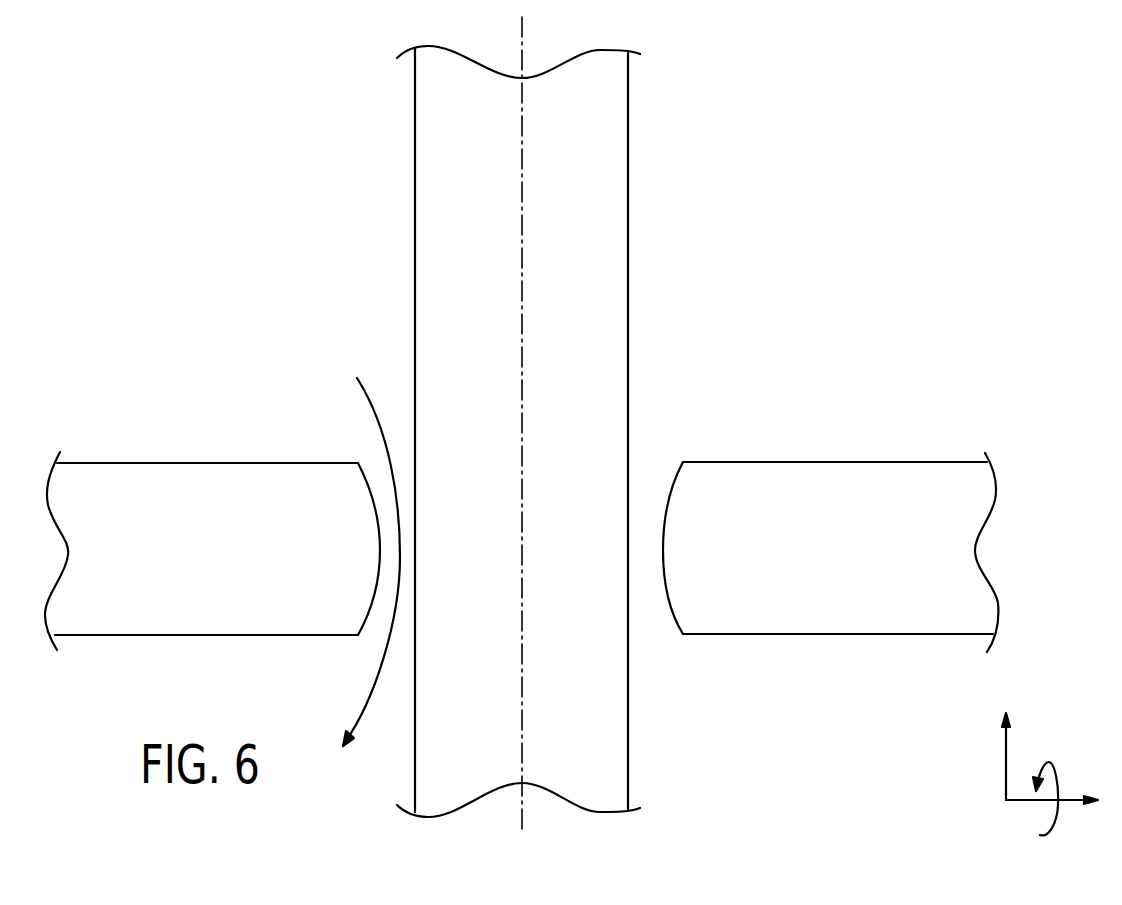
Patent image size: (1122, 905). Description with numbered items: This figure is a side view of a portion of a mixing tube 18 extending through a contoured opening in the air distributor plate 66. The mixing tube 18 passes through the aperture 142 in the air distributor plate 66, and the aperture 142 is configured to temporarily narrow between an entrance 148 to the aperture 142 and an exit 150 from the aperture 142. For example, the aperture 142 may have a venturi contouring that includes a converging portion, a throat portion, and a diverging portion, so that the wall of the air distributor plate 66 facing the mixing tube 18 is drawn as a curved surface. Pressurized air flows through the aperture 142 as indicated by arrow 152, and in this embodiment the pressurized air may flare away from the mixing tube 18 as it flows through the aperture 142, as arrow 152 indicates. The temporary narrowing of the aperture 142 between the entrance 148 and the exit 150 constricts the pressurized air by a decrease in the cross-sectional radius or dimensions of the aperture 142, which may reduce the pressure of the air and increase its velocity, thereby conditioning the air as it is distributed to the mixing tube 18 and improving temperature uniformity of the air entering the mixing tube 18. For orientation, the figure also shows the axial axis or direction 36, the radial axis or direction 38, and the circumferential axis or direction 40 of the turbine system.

The mixing tube 18 is at (630, 197).
The aperture 142 is at (643, 475).
The entrance 148 is at (663, 464).
The air distributor plate 66 is at (837, 462).
The exit 150 is at (659, 641).
The arrow 152 is at (370, 547).
The axial axis or direction 36 is at (1043, 803).
The radial axis or direction 38 is at (1004, 762).
The circumferential axis or direction 40 is at (1053, 778).